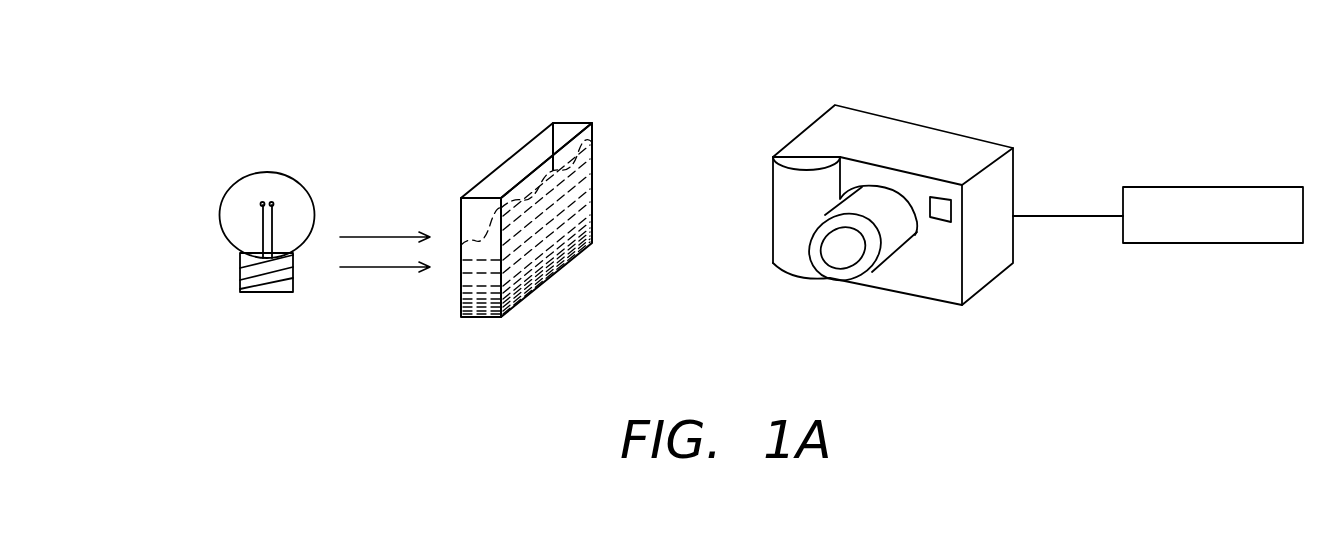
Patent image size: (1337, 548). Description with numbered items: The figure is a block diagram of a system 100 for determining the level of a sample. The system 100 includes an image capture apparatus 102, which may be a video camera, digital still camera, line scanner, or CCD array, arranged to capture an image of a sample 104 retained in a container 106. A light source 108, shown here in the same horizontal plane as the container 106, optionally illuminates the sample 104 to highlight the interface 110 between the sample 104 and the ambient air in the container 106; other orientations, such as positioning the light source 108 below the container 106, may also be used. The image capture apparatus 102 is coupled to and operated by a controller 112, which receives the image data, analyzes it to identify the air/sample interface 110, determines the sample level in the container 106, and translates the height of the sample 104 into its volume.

The system 100 is at (376, 91).
The image capture apparatus 102 is at (920, 122).
The sample 104 is at (570, 201).
The container 106 is at (604, 122).
The light source 108 is at (233, 185).
The interface 110 is at (583, 160).
The controller 112 is at (1200, 187).